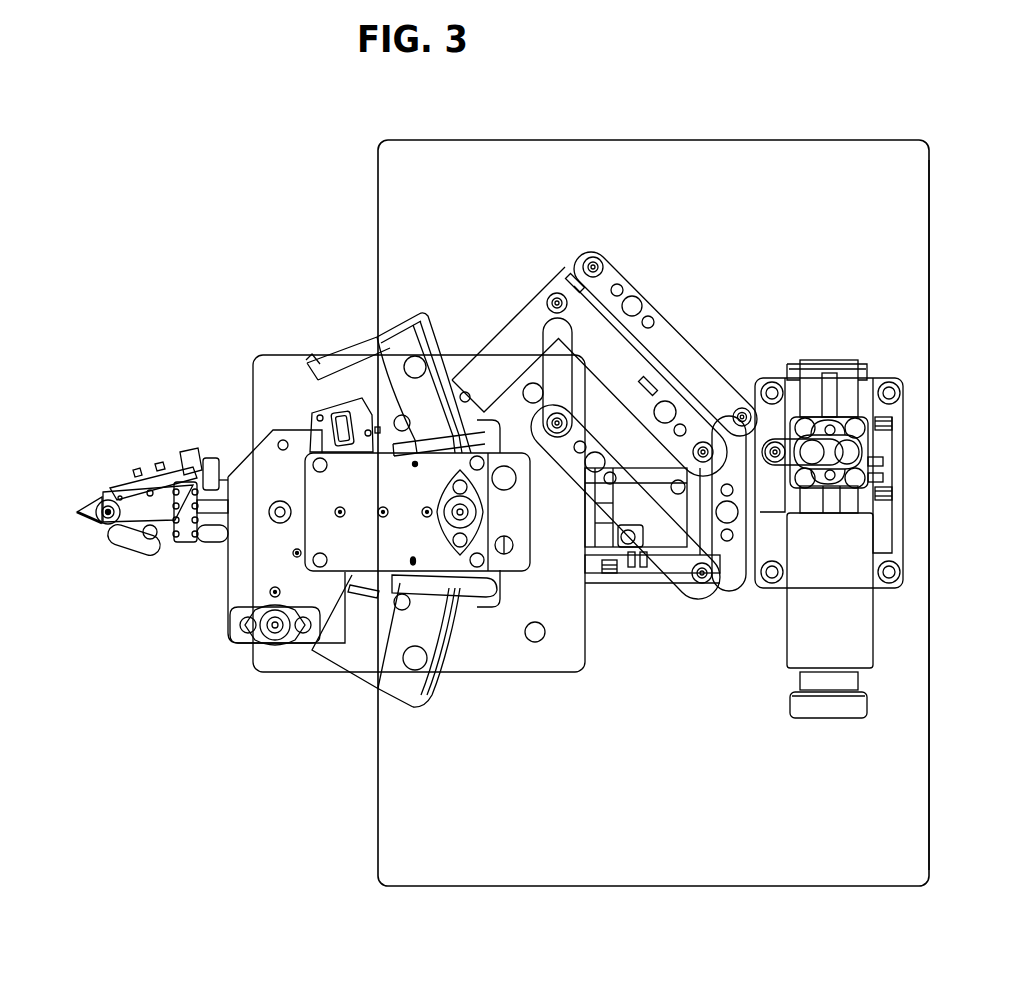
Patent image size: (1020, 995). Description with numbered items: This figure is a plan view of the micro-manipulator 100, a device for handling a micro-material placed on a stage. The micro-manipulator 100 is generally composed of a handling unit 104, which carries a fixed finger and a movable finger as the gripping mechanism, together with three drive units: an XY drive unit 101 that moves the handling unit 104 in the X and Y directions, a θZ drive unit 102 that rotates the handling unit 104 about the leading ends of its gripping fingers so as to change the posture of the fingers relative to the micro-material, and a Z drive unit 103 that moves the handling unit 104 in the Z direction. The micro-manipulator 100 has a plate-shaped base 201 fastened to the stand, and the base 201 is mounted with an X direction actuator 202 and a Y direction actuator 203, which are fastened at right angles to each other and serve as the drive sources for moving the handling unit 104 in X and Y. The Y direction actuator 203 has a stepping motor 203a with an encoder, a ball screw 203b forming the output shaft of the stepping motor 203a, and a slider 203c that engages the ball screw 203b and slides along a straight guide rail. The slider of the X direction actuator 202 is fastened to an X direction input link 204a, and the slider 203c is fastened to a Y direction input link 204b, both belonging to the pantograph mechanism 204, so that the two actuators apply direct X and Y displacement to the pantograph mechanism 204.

The micro-manipulator 100 is at (660, 128).
The XY drive unit 101 is at (737, 286).
The θZ drive unit 102 is at (345, 306).
The Z drive unit 103 is at (215, 607).
The handling unit 104 is at (79, 493).
The base 201 is at (929, 278).
The X direction actuator 202 is at (639, 610).
The Y direction actuator 203 is at (916, 556).
The stepping motor 203a is at (873, 630).
The ball screw 203b is at (843, 388).
The slider 203c is at (863, 440).
The pantograph mechanism 204 is at (600, 245).
The X direction input link 204a is at (723, 583).
The Y direction input link 204b is at (822, 440).